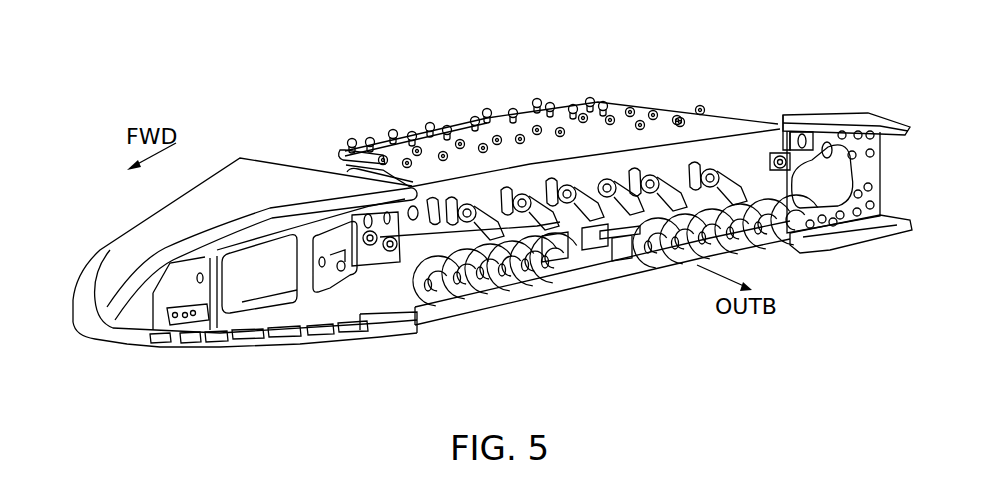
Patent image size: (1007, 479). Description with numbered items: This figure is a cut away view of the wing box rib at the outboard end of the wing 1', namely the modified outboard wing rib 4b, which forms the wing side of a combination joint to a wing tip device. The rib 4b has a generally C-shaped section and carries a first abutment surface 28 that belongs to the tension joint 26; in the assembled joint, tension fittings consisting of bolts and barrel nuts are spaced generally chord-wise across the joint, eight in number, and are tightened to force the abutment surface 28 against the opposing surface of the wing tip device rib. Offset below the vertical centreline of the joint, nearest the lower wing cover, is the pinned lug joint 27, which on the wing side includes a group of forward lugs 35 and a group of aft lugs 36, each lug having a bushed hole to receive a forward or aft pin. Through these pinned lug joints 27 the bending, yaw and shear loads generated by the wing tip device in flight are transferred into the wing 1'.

The wing 1' is at (245, 186).
The outboard wing rib 4b is at (398, 162).
The tension joint 26 is at (601, 170).
The pinned lug joint 27 is at (660, 294).
The first abutment surface 28 is at (697, 157).
The group of forward lugs 35 is at (432, 343).
The group of aft lugs 36 is at (806, 272).